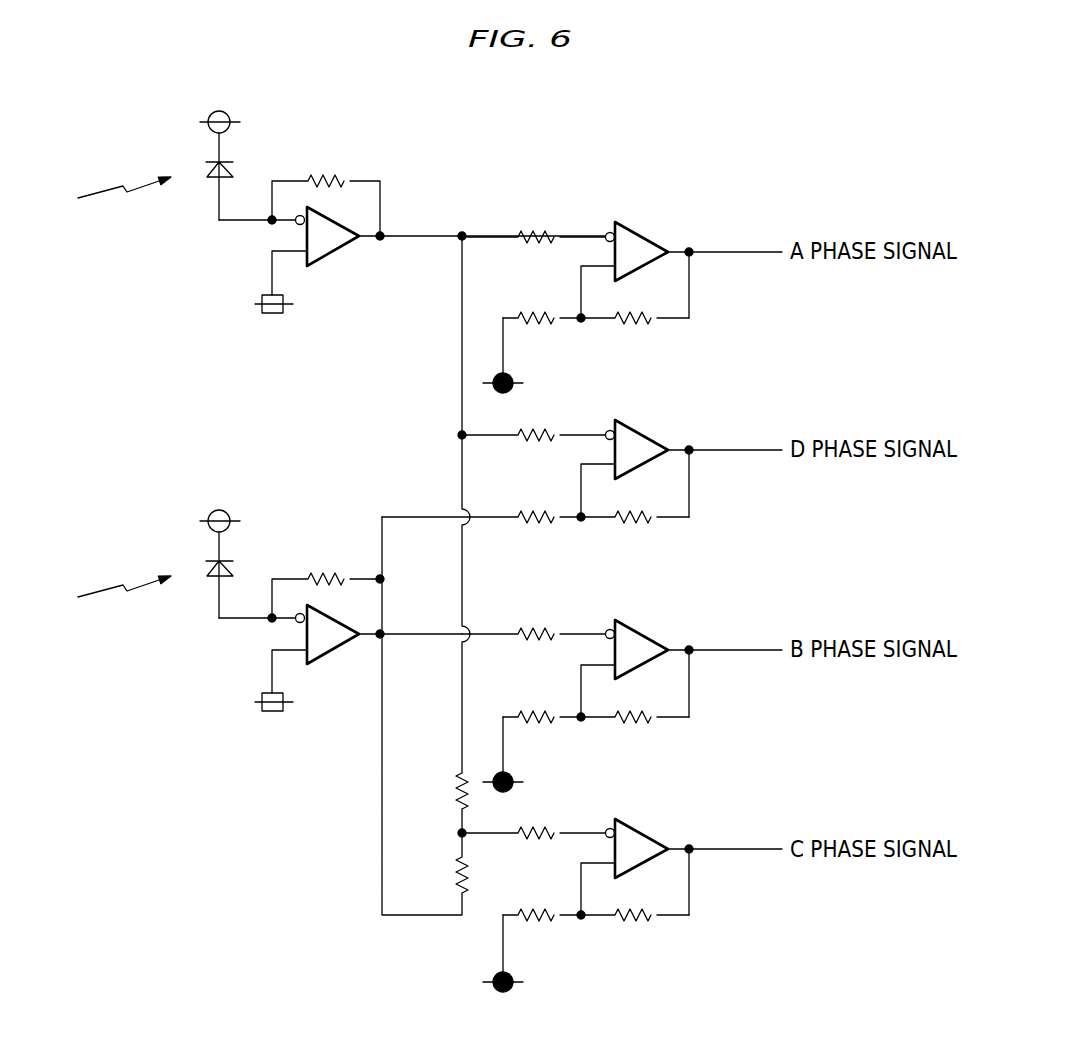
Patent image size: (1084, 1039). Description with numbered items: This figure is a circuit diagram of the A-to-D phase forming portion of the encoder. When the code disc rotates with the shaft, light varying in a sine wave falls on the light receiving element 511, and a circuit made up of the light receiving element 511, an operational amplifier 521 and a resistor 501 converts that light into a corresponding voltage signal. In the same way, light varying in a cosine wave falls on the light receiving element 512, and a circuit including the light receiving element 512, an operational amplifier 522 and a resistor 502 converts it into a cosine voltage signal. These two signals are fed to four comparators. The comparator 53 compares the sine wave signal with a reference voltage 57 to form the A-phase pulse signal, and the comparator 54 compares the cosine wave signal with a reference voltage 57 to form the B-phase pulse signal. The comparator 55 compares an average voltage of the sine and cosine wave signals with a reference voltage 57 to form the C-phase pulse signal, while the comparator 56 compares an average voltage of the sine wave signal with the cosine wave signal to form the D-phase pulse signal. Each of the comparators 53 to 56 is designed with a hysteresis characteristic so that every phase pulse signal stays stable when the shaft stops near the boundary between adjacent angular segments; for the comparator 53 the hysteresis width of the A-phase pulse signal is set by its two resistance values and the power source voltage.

The light receiving element 511 is at (233, 171).
The light receiving element 512 is at (233, 571).
The resistor 501 is at (338, 180).
The resistor 502 is at (338, 578).
The operational amplifier 521 is at (330, 252).
The operational amplifier 522 is at (330, 650).
The comparator 53 is at (640, 232).
The comparator 56 is at (640, 430).
The comparator 54 is at (640, 628).
The comparator 55 is at (640, 828).
The reference voltage 57 is at (508, 373).